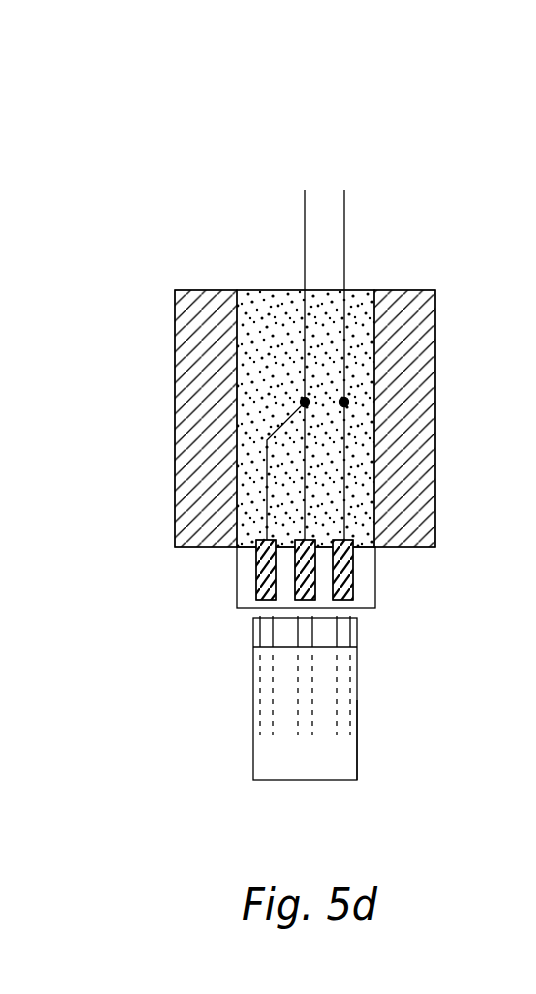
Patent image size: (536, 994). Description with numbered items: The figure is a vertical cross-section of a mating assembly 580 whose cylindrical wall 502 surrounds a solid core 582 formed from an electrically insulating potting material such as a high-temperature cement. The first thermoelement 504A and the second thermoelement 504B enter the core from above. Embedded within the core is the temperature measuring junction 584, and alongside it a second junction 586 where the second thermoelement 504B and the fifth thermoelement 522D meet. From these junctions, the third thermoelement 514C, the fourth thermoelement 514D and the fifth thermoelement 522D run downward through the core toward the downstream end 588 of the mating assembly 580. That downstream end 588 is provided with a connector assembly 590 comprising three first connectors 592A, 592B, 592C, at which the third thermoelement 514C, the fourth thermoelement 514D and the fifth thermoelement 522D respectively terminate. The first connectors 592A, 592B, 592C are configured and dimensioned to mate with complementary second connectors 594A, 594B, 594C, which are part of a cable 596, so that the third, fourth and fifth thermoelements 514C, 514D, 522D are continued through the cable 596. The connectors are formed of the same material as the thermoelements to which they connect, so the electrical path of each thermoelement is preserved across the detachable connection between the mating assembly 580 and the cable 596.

The mating assembly 580 is at (108, 71).
The cylindrical wall 502 is at (422, 340).
The solid core 582 is at (283, 322).
The first thermoelement 504A is at (305, 217).
The second thermoelement 504B is at (344, 222).
The temperature measuring junction 584 is at (303, 400).
The second junction 586 is at (350, 402).
The third thermoelement 514C is at (267, 424).
The fourth thermoelement 514D is at (290, 472).
The fifth thermoelement 522D is at (342, 482).
The connector assembly 590 is at (375, 580).
The first connector 592A is at (262, 553).
The first connector 592B is at (293, 600).
The first connector 592C is at (350, 570).
The downstream end 588 is at (399, 614).
The second connector 594A is at (267, 632).
The second connector 594B is at (302, 632).
The second connector 594C is at (345, 635).
The cable 596 is at (357, 743).